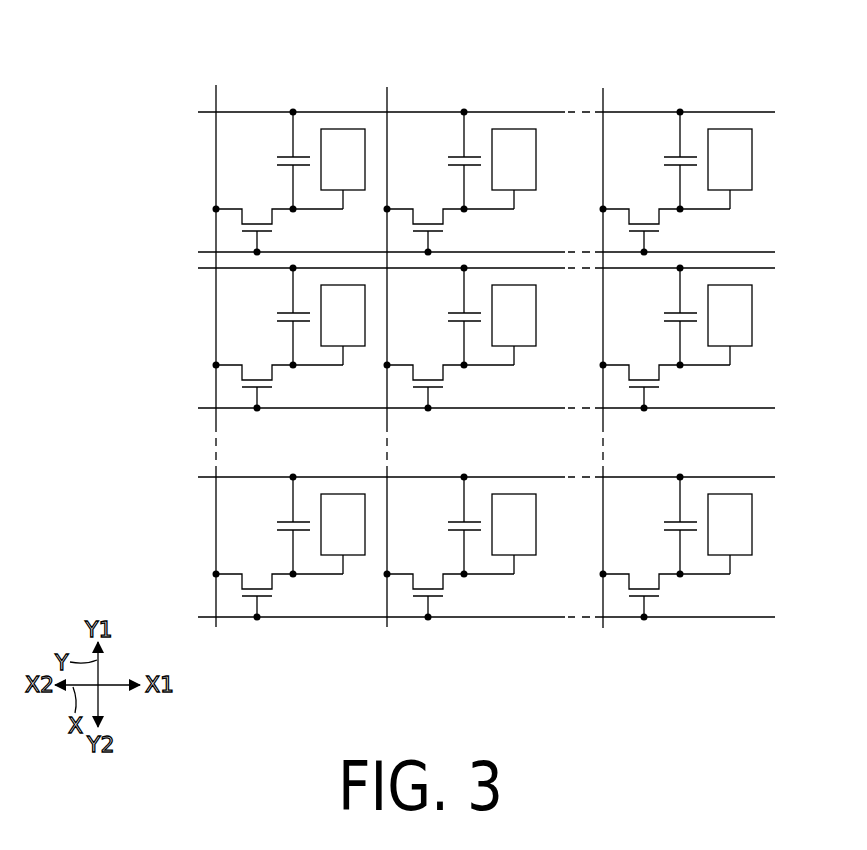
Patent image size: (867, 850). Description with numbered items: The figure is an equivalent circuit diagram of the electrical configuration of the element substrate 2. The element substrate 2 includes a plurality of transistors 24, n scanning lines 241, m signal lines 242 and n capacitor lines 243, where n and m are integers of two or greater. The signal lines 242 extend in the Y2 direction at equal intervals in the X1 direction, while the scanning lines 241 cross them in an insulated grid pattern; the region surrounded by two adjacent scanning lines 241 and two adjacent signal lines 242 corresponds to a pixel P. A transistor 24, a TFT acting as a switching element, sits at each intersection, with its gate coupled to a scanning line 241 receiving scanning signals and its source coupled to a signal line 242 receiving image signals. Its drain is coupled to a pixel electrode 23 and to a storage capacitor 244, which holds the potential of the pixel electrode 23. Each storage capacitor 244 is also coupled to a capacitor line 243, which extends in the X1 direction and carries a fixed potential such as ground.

The element substrate 2 is at (784, 82).
The pixel electrode 23 is at (341, 129).
The transistor 24 is at (285, 232).
The scanning line 241 is at (212, 251).
The signal line 242 is at (218, 105).
The capacitor line 243 is at (210, 112).
The storage capacitor 244 is at (268, 160).
The pixel P is at (229, 168).